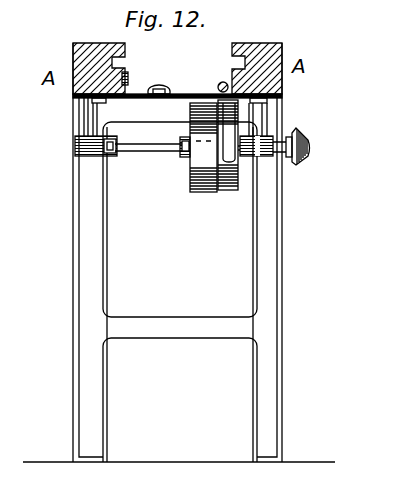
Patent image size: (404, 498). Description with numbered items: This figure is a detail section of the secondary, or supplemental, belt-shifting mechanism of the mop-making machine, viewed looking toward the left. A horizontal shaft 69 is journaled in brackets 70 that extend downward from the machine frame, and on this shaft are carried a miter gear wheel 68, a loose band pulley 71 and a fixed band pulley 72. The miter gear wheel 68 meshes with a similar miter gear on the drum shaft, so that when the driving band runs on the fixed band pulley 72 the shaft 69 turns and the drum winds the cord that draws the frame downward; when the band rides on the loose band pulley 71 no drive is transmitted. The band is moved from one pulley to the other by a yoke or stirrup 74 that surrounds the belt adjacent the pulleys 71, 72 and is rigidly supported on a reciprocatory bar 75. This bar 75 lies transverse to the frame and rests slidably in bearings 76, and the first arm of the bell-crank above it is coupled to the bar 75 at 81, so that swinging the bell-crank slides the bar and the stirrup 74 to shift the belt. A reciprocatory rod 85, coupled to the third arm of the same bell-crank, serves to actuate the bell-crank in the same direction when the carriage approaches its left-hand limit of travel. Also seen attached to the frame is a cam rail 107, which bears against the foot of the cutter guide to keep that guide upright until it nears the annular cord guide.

The miter gear wheel 68 is at (299, 163).
The horizontal shaft 69 is at (131, 152).
The brackets 70 is at (90, 126).
The loose band pulley 71 is at (201, 194).
The fixed band pulley 72 is at (219, 194).
The yoke or stirrup 74 is at (245, 122).
The reciprocatory bar 75 is at (186, 94).
The bearings 76 is at (107, 101).
The coupling 81 is at (160, 87).
The reciprocatory rod 85 is at (226, 82).
The cam rail 107 is at (128, 76).